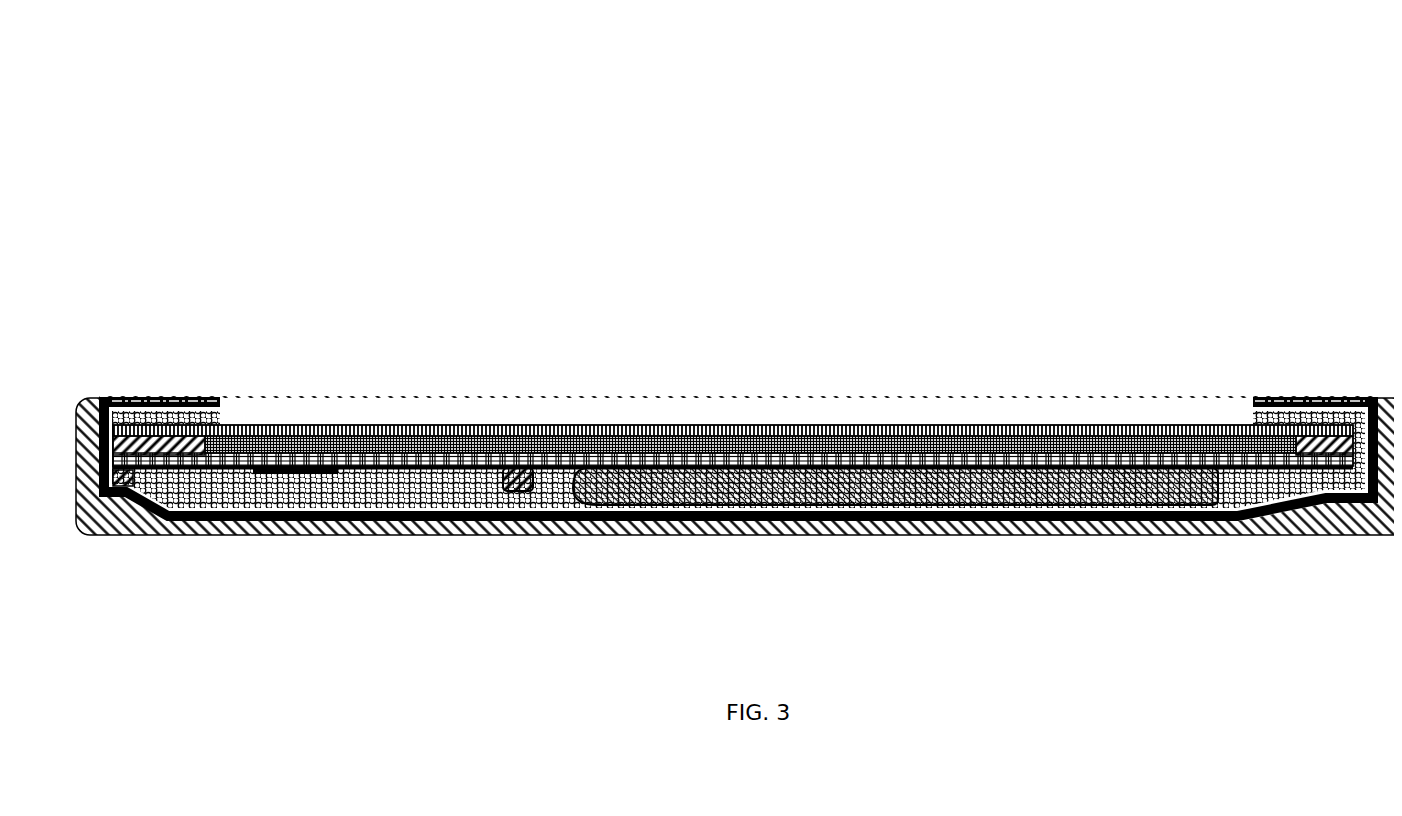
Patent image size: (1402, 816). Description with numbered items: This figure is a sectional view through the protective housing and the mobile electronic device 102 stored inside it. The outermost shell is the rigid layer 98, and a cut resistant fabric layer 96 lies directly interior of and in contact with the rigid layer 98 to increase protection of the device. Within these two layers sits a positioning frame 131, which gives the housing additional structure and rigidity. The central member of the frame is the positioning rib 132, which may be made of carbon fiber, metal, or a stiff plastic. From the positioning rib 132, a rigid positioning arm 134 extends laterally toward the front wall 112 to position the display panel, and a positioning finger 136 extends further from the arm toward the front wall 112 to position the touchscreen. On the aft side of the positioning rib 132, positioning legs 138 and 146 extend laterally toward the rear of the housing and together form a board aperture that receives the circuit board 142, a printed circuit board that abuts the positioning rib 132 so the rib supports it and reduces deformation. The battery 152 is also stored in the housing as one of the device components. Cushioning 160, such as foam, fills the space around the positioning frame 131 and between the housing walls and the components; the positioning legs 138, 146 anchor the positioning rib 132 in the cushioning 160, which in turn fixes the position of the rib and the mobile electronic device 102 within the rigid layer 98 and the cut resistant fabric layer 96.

The cut resistant fabric layer 96 is at (1314, 506).
The rigid layer 98 is at (1356, 510).
The mobile electronic device 102 is at (833, 438).
The front wall 112 is at (1285, 383).
The positioning frame 131 is at (493, 432).
The positioning rib 132 is at (613, 428).
The positioning arm 134 is at (168, 390).
The positioning finger 136 is at (110, 390).
The positioning leg 138 is at (108, 482).
The circuit board 142 is at (254, 463).
The positioning leg 146 is at (510, 463).
The battery 152 is at (660, 478).
The cushioning 160 is at (1233, 483).